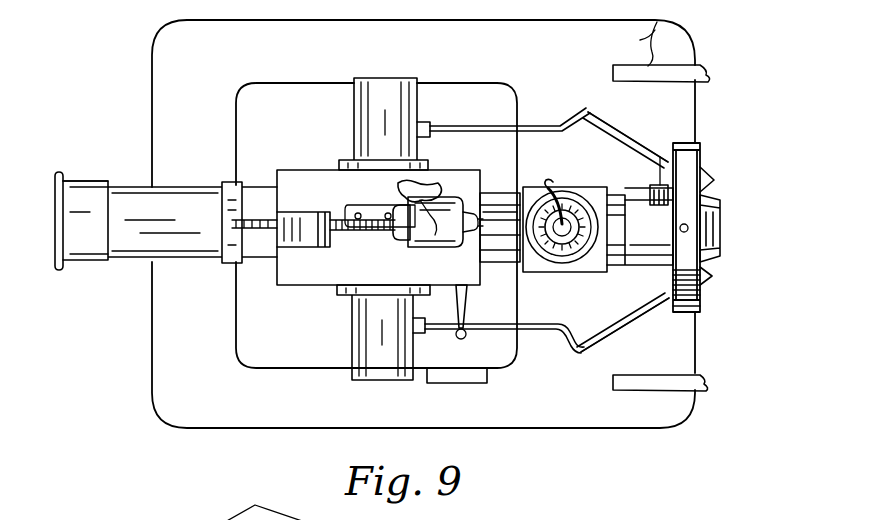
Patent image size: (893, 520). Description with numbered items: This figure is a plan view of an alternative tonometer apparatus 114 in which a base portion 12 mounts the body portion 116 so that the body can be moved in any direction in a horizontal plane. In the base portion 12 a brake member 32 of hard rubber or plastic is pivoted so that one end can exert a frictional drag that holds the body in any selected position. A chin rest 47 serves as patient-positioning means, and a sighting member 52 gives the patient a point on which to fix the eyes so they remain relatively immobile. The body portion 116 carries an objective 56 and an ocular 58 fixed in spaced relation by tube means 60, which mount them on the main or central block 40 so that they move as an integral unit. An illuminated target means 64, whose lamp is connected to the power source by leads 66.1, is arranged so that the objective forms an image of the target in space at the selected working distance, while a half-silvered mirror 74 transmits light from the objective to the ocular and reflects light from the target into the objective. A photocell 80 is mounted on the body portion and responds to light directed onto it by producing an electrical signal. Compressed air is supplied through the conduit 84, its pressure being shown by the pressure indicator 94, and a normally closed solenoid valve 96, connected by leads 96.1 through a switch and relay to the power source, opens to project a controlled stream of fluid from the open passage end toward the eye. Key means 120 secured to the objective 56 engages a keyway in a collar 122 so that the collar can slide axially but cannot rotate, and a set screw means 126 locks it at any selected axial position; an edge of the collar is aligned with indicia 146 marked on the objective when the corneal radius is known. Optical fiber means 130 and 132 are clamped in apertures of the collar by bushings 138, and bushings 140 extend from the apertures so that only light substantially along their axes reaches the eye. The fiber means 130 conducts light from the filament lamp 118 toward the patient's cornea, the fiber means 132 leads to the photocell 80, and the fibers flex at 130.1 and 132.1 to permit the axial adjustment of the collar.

The base portion 12 is at (656, 426).
The brake member 32 is at (470, 384).
The main or central block 40 is at (297, 286).
The chin rest 47 is at (652, 20).
The sighting member 52 is at (465, 316).
The objective lens means 56 is at (640, 272).
The ocular means 58 is at (70, 270).
The tube means 60 is at (140, 260).
The illuminated target means 64 is at (544, 186).
The leads 66.1 is at (551, 186).
The half-silvered mirror 74 is at (546, 272).
The photoelectric cell 80 is at (383, 372).
The conduit 84 is at (502, 224).
The pressure indicator 94 is at (296, 214).
The solenoid valve 96 is at (432, 238).
The leads 96.1 is at (405, 184).
The alternative apparatus 114 is at (713, 43).
The body portion 116 is at (98, 164).
The filament lamp 118 is at (385, 90).
The key means 120 is at (660, 157).
The collar 122 is at (700, 145).
The set screw means 126 is at (688, 228).
The optical fiber means 130 is at (530, 128).
The flexed portion of optical fiber means 130.1 is at (575, 118).
The optical fiber means 132 is at (538, 334).
The flexed portion of optical fiber means 132.1 is at (578, 348).
The bushing 138 is at (675, 146).
The bushing 140 is at (714, 178).
The indicia 146 is at (650, 192).